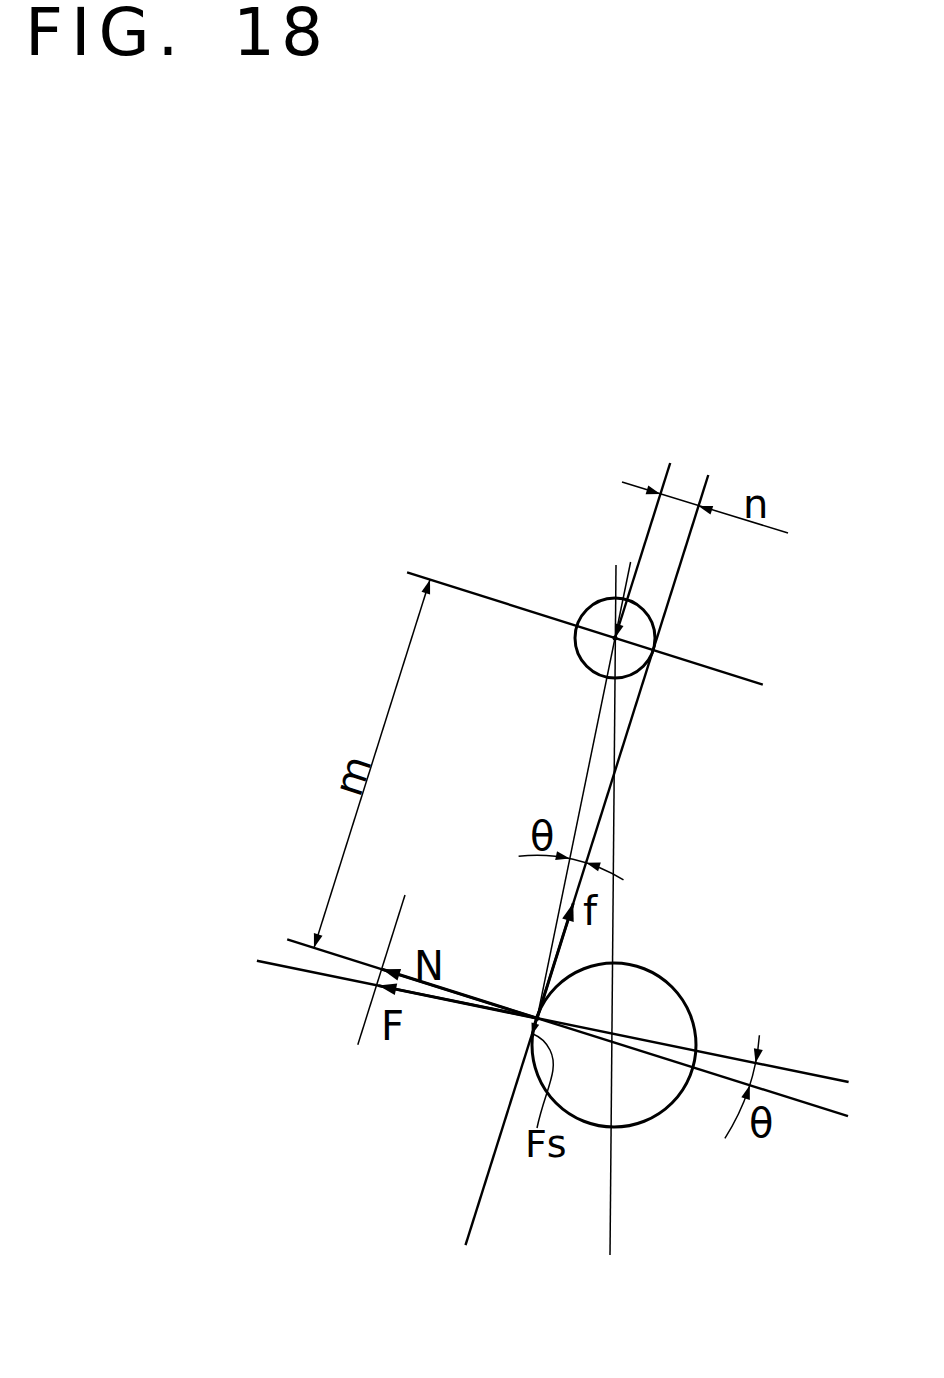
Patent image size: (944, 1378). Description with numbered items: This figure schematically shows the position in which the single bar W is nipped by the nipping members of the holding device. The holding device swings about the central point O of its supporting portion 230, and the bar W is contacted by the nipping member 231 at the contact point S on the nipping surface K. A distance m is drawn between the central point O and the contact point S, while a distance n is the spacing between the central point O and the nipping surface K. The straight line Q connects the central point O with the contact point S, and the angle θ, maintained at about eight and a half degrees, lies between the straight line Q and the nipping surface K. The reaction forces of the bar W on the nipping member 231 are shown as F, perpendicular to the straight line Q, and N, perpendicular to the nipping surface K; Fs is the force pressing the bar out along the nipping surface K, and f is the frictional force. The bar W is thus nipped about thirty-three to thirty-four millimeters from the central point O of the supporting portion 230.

The supporting portion 230 is at (593, 604).
The nipping member 231 is at (656, 860).
The nipping surface K is at (683, 567).
The straight line Q is at (645, 542).
The central point O is at (614, 640).
The contact point S is at (533, 1013).
The single bar W is at (658, 1112).